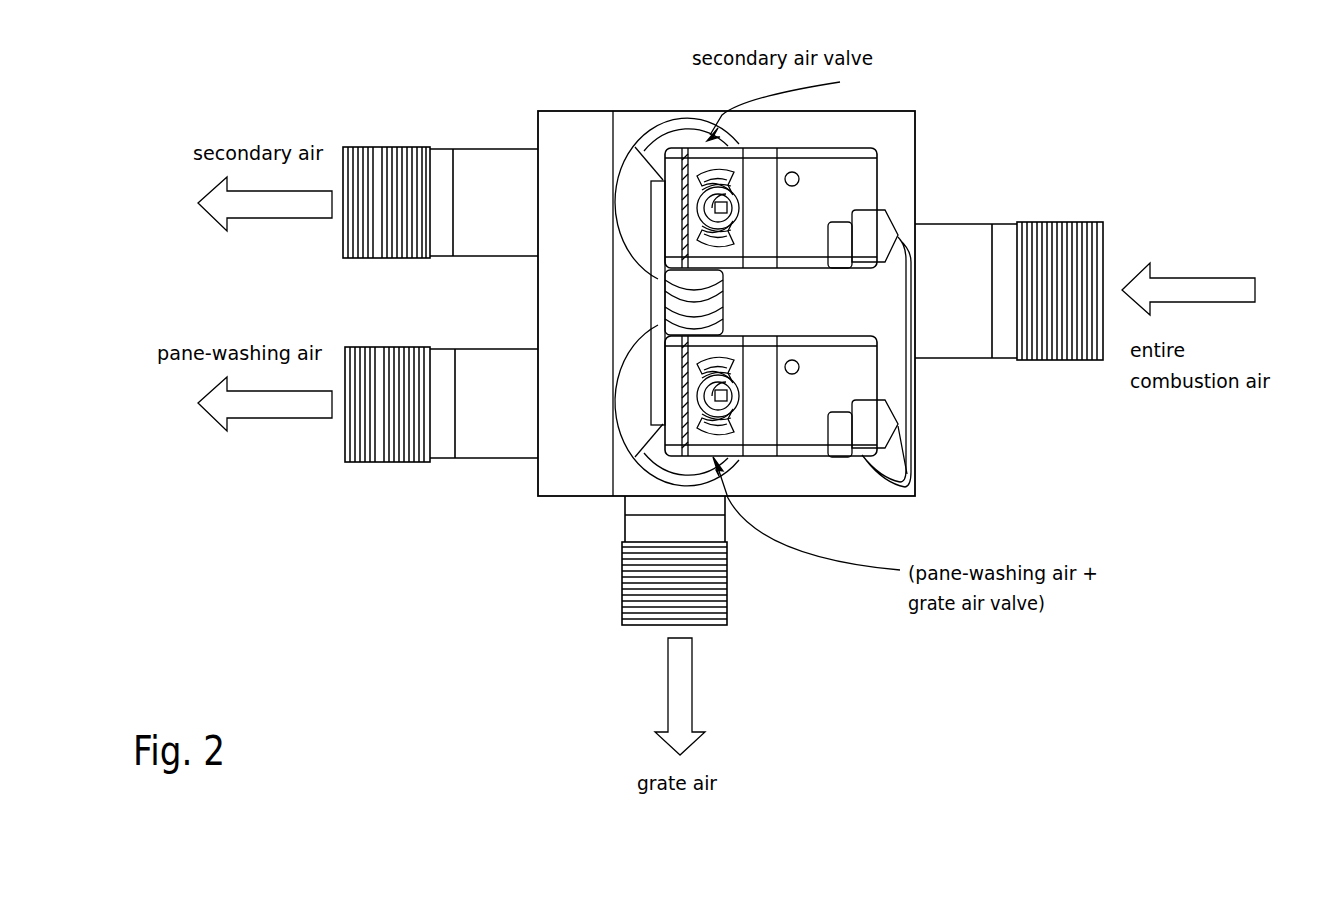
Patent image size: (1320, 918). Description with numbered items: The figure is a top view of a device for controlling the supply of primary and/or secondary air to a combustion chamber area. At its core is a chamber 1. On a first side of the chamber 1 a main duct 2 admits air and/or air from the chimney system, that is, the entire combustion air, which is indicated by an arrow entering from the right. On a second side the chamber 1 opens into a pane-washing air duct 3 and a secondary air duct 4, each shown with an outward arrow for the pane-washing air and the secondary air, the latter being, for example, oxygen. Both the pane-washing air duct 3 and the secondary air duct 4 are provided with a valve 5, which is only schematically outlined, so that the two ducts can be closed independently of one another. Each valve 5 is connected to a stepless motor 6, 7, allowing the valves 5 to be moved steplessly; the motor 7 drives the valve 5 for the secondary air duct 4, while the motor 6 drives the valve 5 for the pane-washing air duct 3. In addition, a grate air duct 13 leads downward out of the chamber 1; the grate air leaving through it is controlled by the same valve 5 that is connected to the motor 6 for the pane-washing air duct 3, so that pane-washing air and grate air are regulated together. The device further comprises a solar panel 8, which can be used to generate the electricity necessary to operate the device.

The chamber 1 is at (901, 110).
The main duct 2 is at (1068, 222).
The pane-washing air duct 3 is at (375, 462).
The secondary air duct 4 is at (390, 147).
The valve 5 is at (628, 172).
The stepless motor 6 is at (808, 425).
The stepless motor 7 is at (862, 185).
The solar panel 8 is at (576, 125).
The grate air duct 13 is at (622, 592).